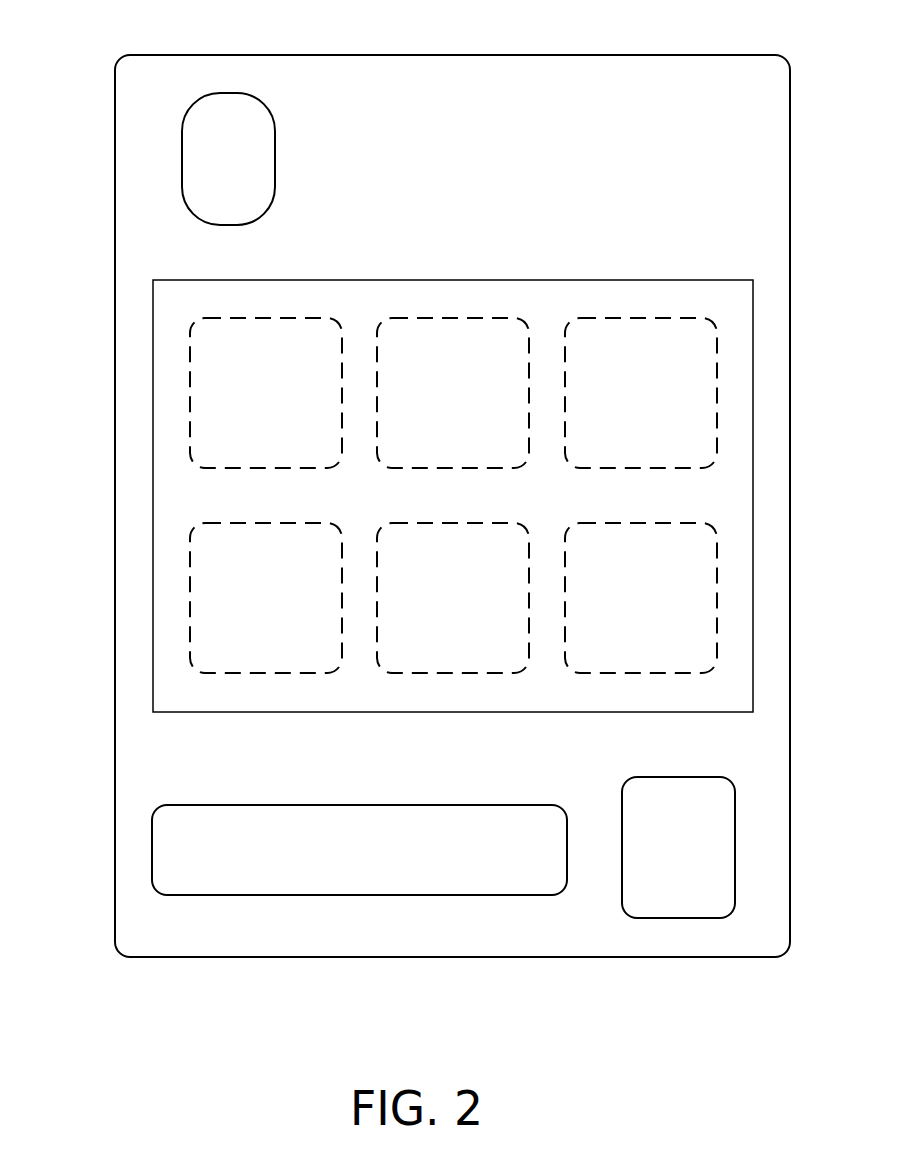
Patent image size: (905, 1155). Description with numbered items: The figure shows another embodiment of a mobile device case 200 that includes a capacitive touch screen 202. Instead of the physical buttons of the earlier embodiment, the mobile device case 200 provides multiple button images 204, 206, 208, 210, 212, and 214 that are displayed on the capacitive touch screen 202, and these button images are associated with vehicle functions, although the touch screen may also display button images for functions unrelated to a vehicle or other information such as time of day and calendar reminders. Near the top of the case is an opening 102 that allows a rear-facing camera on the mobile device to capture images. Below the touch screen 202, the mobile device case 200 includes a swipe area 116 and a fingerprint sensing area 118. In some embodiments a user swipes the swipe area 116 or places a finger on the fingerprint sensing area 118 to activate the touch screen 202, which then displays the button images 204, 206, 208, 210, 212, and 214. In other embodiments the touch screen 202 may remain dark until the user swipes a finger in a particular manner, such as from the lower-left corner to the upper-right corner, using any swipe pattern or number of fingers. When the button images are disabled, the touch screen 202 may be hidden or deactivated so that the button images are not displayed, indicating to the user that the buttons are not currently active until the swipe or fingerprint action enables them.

The mobile device case 200 is at (453, 55).
The opening 102 is at (181, 148).
The capacitive touch screen 202 is at (227, 280).
The button image 204 is at (190, 365).
The button image 206 is at (462, 318).
The button image 208 is at (652, 318).
The button image 210 is at (295, 673).
The button image 212 is at (483, 673).
The button image 214 is at (640, 673).
The swipe area 116 is at (227, 805).
The fingerprint sensing area 118 is at (680, 777).